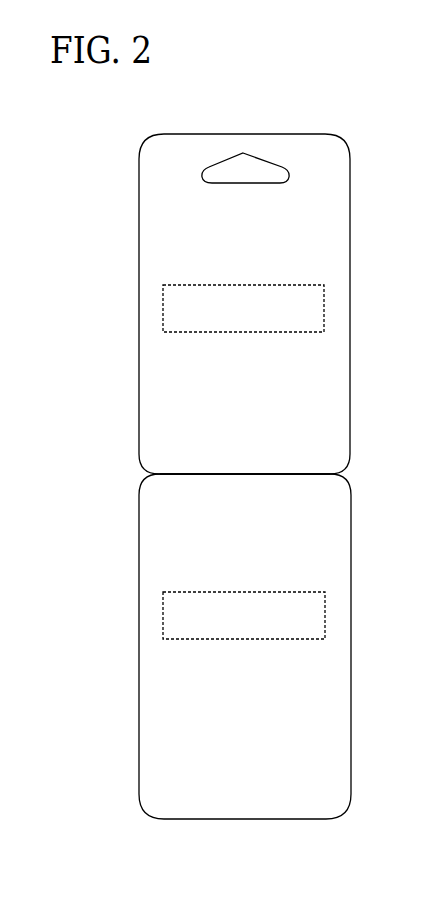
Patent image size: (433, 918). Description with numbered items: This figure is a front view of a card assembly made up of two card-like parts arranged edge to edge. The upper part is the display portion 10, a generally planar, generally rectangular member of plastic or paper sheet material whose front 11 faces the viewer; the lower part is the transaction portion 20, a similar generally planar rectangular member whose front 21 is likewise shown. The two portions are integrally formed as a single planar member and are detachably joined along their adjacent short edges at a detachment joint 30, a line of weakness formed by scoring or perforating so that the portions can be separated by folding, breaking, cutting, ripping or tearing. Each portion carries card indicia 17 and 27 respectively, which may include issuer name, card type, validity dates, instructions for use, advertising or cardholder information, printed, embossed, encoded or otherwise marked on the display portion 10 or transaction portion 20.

The display portion 10 is at (256, 304).
The front of display portion 11 is at (160, 400).
The card indicia 17 is at (324, 310).
The detachment joint 30 is at (316, 474).
The transaction portion 20 is at (218, 646).
The front of transaction portion 21 is at (162, 718).
The card indicia 27 is at (326, 617).